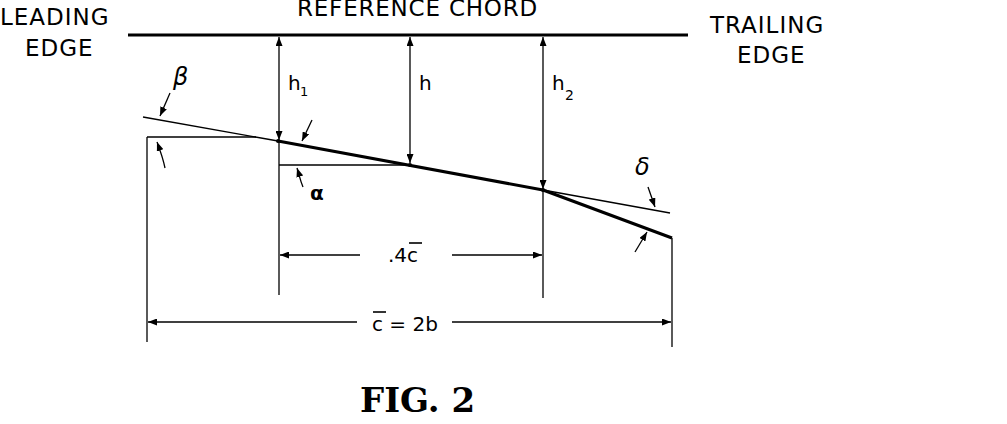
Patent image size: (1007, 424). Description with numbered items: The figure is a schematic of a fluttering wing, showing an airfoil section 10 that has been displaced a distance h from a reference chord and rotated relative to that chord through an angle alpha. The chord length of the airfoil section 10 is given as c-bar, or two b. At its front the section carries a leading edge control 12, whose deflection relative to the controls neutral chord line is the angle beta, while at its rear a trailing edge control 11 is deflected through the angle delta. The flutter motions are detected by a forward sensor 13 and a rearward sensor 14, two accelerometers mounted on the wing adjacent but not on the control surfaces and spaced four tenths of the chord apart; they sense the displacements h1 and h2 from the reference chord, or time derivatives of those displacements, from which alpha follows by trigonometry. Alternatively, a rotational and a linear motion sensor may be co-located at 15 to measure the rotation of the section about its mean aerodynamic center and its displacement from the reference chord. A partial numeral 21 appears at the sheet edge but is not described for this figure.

The airfoil section 10 is at (468, 178).
The trailing edge control 11 is at (607, 215).
The leading edge control 12 is at (208, 140).
The forward sensor 13 is at (278, 141).
The rearward sensor 14 is at (545, 189).
The co-located rotational and linear motion sensor location 15 is at (412, 164).
The element 21 is at (668, 423).